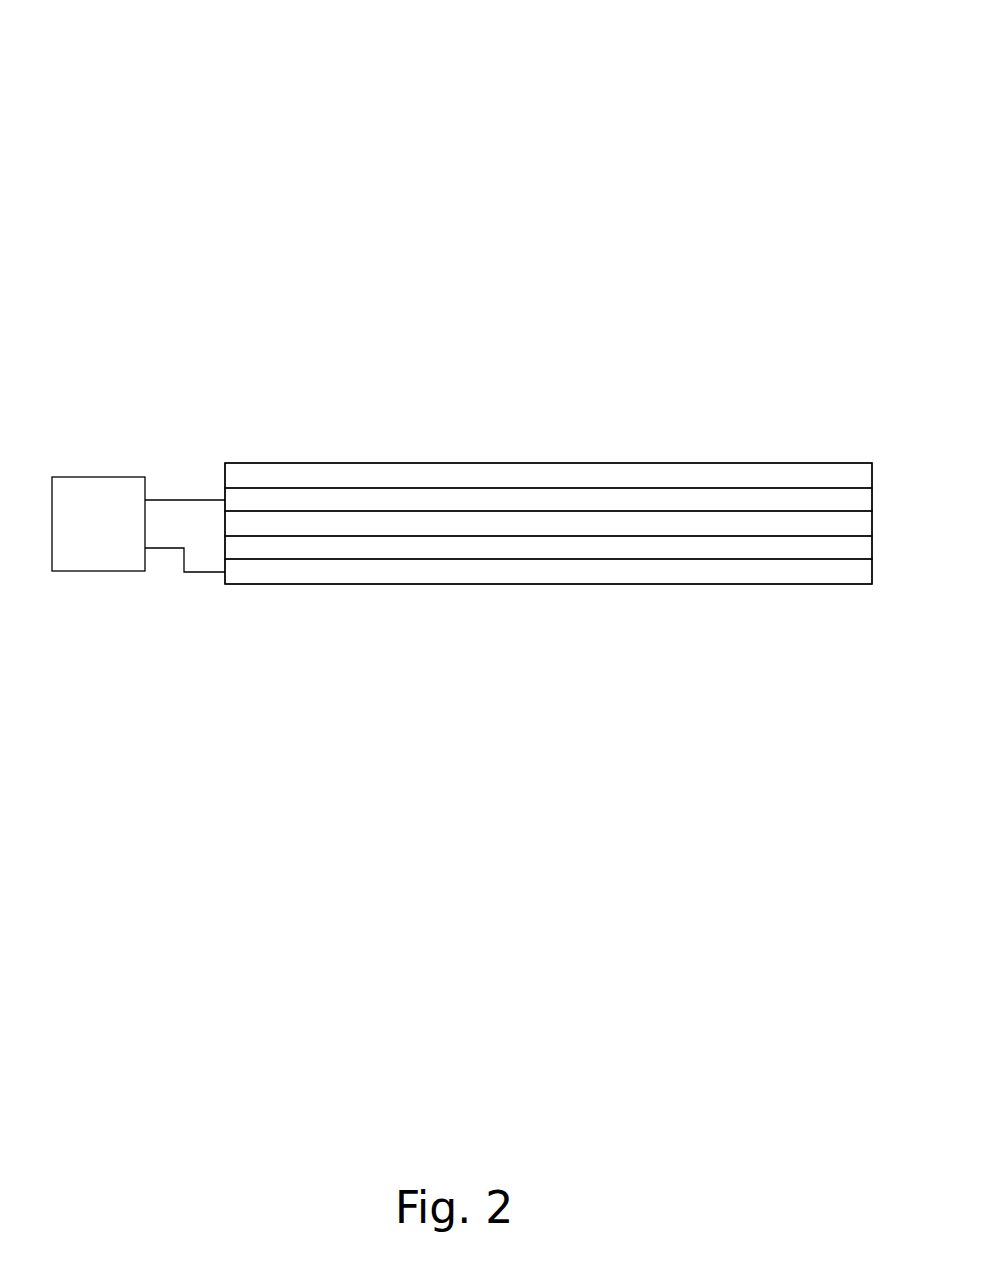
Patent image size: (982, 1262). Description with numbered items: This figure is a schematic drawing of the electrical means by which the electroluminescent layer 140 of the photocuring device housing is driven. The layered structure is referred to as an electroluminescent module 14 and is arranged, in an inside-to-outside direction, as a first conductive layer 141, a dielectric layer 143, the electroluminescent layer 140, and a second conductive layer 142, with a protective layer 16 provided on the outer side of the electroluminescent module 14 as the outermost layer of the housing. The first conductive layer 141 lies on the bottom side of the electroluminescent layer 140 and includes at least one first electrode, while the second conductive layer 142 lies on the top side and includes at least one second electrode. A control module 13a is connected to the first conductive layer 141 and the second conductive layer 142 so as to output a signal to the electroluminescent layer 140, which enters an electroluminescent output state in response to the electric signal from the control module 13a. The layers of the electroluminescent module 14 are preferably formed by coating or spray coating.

The electroluminescent module 14 is at (760, 44).
The protective layer 16 is at (278, 478).
The second conductive layer 142 is at (385, 502).
The electroluminescent layer 140 is at (510, 527).
The dielectric layer 143 is at (262, 545).
The first conductive layer 141 is at (413, 573).
The control module 13a is at (97, 571).